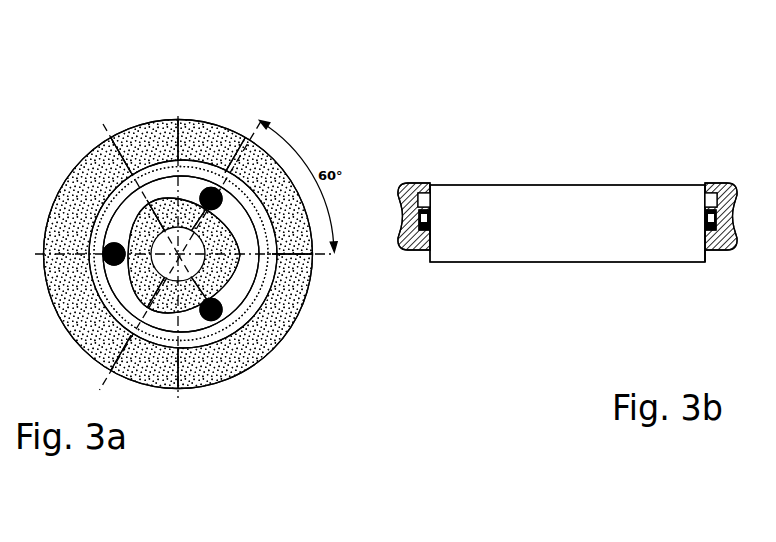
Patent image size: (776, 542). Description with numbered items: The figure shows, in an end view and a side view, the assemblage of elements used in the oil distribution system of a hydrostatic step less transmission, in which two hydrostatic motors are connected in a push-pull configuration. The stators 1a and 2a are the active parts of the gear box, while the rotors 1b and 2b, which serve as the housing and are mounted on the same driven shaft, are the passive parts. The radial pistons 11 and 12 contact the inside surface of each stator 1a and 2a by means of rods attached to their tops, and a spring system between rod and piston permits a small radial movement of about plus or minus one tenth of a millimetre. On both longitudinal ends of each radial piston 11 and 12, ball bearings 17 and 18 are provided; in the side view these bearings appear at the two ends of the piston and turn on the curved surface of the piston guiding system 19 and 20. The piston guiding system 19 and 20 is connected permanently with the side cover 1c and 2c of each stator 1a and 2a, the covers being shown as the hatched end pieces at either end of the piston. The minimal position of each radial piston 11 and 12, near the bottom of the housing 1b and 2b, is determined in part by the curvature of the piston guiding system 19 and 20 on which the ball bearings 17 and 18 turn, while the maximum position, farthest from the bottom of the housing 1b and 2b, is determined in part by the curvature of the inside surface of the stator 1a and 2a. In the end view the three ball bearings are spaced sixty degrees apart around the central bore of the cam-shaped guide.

In FIG. 3A, the stator 1a is at (58, 202).
In FIG. 3A, the stator 2a is at (178, 205).
In FIG. 3A, the rotor 1b is at (114, 254).
In FIG. 3A, the rotor 2b is at (210, 181).
In FIG. 3B, the side cover 1c is at (732, 188).
In FIG. 3B, the side cover 2c is at (708, 135).
In FIG. 3B, the radial piston 11 is at (567, 347).
In FIG. 3B, the radial piston 12 is at (567, 269).
In FIG. 3A, the ball bearing 17 is at (212, 307).
In FIG. 3B, the ball bearing 17 is at (707, 256).
In FIG. 3A, the ball bearing 18 is at (266, 337).
In FIG. 3B, the ball bearing 18 is at (683, 301).
In FIG. 3A, the piston guiding system 19 is at (226, 262).
In FIG. 3B, the piston guiding system 19 is at (423, 185).
In FIG. 3A, the piston guiding system 20 is at (279, 295).
In FIG. 3B, the piston guiding system 20 is at (468, 135).